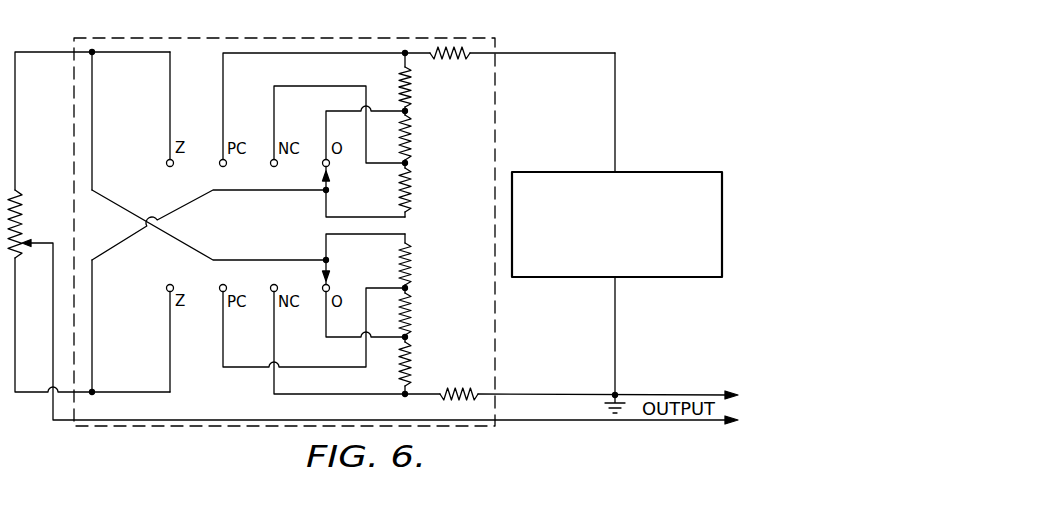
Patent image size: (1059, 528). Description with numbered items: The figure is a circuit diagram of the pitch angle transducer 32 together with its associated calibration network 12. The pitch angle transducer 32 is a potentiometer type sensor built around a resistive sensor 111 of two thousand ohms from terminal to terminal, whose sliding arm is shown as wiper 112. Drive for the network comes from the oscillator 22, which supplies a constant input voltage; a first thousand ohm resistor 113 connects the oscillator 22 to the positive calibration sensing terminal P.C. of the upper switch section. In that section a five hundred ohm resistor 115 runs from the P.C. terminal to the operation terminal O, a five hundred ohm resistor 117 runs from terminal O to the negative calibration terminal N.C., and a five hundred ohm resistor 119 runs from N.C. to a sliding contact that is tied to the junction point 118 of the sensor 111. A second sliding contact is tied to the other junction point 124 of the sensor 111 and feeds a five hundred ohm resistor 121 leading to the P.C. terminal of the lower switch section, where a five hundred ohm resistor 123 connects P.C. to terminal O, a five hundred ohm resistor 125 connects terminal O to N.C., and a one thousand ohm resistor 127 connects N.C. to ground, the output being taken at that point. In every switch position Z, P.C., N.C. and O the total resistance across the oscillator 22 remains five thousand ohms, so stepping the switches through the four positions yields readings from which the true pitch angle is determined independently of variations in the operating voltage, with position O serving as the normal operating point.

The calibration network 12 is at (72, 39).
The pitch angle transducer 32 is at (53, 107).
The resistive sensor 111 is at (23, 207).
The potentiometer wiper 112 is at (37, 243).
The first thousand ohm resistor 113 is at (455, 58).
The 500 ohm resistor 115 is at (412, 90).
The 500 ohm resistor 117 is at (412, 136).
The junction point 118 is at (94, 391).
The 500 ohm resistor 119 is at (412, 188).
The 500 ohm resistor 121 is at (412, 264).
The 500 ohm resistor 123 is at (412, 311).
The junction point 124 is at (95, 55).
The 500 ohm resistor 125 is at (412, 361).
The 1,000 ohm resistor 127 is at (478, 392).
The oscillator 22 is at (661, 172).